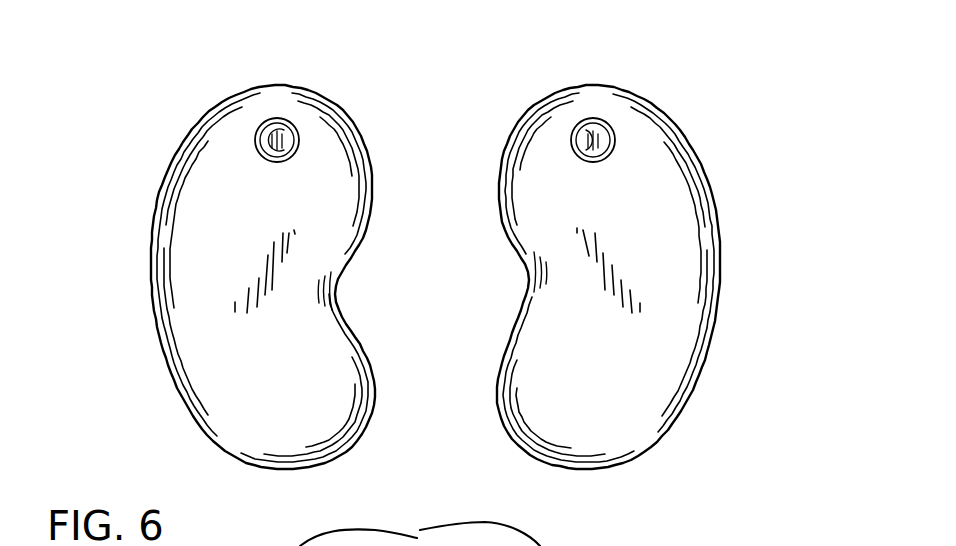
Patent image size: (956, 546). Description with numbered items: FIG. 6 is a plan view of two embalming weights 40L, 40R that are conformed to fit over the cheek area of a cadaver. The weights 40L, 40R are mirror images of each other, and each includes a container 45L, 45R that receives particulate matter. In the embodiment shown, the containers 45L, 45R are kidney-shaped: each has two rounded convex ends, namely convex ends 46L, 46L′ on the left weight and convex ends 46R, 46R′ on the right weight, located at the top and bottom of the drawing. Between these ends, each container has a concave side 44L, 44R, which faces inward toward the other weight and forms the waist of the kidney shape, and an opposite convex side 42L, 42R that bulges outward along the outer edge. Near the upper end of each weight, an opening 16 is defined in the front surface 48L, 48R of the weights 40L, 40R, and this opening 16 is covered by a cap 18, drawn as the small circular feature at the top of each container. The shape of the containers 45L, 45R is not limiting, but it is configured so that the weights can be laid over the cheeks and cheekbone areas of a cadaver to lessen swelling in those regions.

The opening 16 is at (300, 138).
The cap 18 is at (256, 132).
The left weight 40L is at (155, 131).
The right weight 40R is at (715, 124).
The convex side 42L is at (149, 272).
The convex side 42R is at (722, 273).
The concave side 44L is at (336, 293).
The concave side 44R is at (528, 264).
The container 45L is at (178, 403).
The container 45R is at (707, 393).
The convex end 46L is at (278, 86).
The convex end 46R is at (596, 86).
The convex end 46L′ is at (276, 470).
The convex end 46R′ is at (594, 470).
The front surface 48L is at (228, 206).
The front surface 48R is at (640, 205).